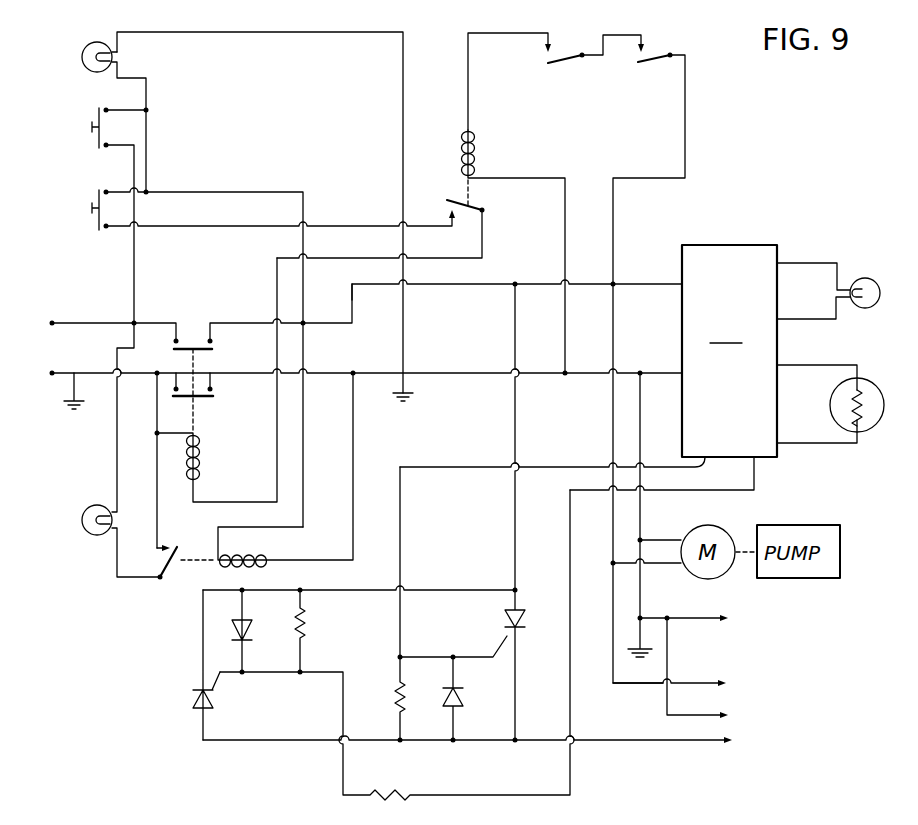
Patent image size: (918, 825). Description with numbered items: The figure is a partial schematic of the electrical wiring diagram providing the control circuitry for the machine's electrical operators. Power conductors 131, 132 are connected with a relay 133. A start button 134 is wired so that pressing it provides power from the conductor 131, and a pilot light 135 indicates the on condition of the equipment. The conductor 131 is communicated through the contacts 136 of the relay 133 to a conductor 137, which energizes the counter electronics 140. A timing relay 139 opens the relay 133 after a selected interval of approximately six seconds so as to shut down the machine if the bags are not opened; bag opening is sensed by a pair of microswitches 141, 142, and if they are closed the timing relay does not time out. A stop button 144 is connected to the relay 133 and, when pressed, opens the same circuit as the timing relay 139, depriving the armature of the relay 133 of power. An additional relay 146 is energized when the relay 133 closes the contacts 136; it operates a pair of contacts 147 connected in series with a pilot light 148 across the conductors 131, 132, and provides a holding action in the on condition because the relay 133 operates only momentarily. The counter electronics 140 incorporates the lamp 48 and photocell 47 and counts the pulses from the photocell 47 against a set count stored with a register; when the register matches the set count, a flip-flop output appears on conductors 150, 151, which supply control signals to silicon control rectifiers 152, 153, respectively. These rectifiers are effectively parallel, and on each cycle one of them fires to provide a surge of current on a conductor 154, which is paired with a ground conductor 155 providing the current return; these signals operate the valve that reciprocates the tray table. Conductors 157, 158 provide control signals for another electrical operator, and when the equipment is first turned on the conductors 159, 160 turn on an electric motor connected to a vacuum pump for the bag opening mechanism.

The photocell 47 is at (870, 383).
The lamp 48 is at (868, 275).
The power conductor 131 is at (87, 320).
The power conductor 132 is at (87, 370).
The relay 133 is at (200, 436).
The start button 134 is at (90, 137).
The pilot light 135 is at (87, 76).
The contacts 136 is at (213, 341).
The conductor 137 is at (352, 313).
The timing relay 139 is at (477, 160).
The counter electronics 140 is at (479, 208).
The microswitch 141 is at (565, 68).
The microswitch 142 is at (656, 62).
The stop button 144 is at (94, 222).
The relay 146 is at (258, 560).
The contacts 147 is at (168, 582).
The pilot light 148 is at (88, 509).
The conductor 150 is at (758, 490).
The conductor 151 is at (697, 480).
The silicon control rectifier 152 is at (190, 700).
The silicon control rectifier 153 is at (505, 620).
The conductor 154 is at (653, 745).
The ground conductor 155 is at (712, 716).
The control signal conductor 157 is at (705, 682).
The control signal conductor 158 is at (713, 620).
The conductor 159 is at (657, 538).
The conductor 160 is at (660, 568).